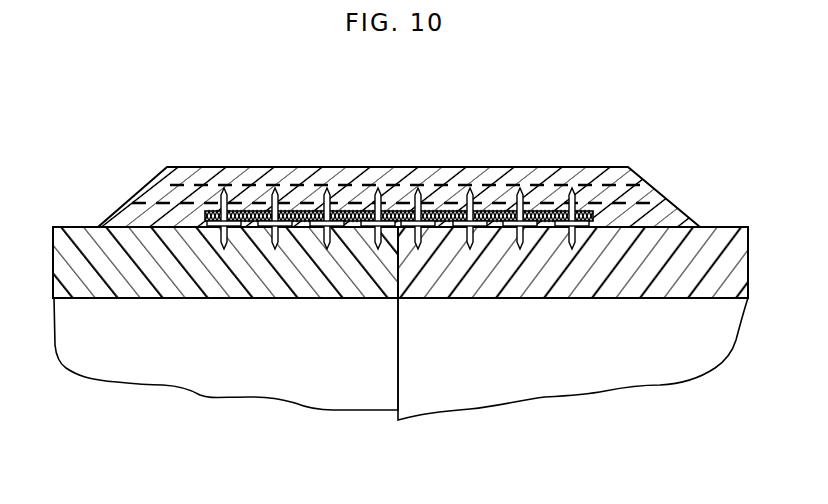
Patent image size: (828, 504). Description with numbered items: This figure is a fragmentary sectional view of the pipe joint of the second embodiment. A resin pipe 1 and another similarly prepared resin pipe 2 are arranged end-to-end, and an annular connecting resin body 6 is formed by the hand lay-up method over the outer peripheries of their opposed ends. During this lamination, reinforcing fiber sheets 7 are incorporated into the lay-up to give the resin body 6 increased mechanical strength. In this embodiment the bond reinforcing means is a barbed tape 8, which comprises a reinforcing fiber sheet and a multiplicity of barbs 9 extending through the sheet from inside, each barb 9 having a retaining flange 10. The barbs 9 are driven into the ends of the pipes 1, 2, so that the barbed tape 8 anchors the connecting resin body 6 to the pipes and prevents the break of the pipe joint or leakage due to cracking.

The resin pipe 1 is at (62, 265).
The resin pipe 2 is at (696, 250).
The annular connecting resin body 6 is at (400, 166).
The reinforcing fiber sheets 7 is at (538, 185).
The barbed tape 8 is at (355, 223).
The barbs 9 is at (490, 185).
The retaining flange 10 is at (311, 229).